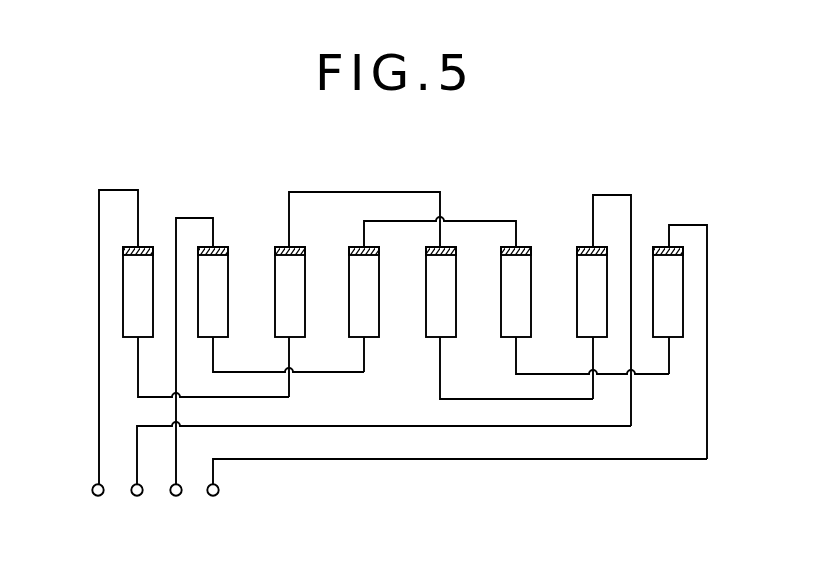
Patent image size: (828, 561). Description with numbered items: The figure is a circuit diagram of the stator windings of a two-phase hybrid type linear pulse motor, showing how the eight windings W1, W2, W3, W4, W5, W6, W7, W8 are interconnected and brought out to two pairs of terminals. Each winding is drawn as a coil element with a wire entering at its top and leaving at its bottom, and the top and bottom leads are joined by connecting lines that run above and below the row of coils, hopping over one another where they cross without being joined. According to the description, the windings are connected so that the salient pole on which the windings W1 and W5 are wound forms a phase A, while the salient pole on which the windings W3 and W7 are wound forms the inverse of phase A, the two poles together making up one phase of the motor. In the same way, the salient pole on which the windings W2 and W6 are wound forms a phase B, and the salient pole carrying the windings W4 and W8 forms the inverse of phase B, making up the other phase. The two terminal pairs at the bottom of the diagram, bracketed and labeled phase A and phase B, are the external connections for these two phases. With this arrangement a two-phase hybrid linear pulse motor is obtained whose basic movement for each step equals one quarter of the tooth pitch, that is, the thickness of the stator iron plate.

The winding W1 is at (137, 285).
The winding W2 is at (218, 285).
The winding W3 is at (285, 278).
The winding W4 is at (362, 283).
The winding W5 is at (440, 292).
The winding W6 is at (517, 292).
The winding W7 is at (593, 292).
The winding W8 is at (670, 285).
The phase A is at (147, 503).
The phase B is at (223, 503).